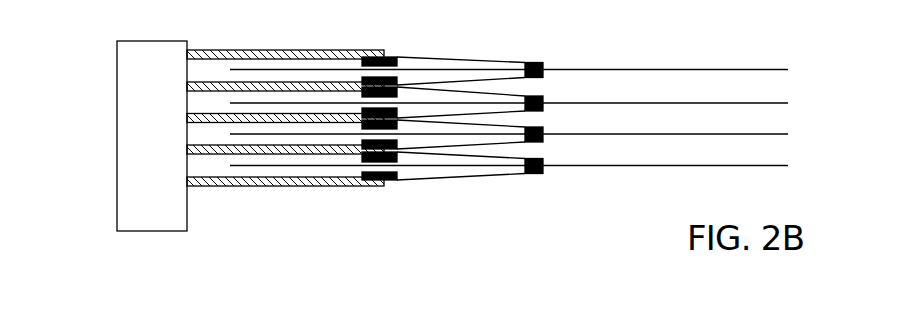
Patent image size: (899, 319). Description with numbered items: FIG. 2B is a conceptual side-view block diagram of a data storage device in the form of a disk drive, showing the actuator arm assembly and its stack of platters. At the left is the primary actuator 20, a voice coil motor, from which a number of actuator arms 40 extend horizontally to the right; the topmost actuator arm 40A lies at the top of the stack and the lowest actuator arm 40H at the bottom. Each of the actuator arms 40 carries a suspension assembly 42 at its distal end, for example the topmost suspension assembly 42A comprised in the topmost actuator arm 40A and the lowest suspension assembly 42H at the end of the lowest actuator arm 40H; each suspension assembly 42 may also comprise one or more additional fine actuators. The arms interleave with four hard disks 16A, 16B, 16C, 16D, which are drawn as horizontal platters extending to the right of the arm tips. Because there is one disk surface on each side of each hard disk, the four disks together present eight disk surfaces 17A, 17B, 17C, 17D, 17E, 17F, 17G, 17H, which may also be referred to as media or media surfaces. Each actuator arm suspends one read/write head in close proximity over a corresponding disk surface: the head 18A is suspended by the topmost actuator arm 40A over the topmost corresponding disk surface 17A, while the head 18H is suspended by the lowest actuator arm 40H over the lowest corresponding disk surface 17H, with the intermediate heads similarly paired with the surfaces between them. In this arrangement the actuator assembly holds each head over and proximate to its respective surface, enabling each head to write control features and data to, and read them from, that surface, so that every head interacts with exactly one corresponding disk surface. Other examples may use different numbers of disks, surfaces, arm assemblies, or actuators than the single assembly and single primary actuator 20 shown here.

The primary actuator 20 is at (116, 73).
The actuator arms 40 is at (285, 137).
The topmost actuator arm 40A is at (304, 49).
The lowest actuator arm 40H is at (250, 187).
The suspension assembly 42 is at (460, 138).
The topmost suspension assembly 42A is at (482, 47).
The lowest suspension assembly 42H is at (484, 190).
The head 18A is at (554, 55).
The head 18H is at (554, 180).
The hard disk 16A is at (802, 70).
The hard disk 16B is at (802, 103).
The hard disk 16C is at (802, 134).
The hard disk 16D is at (802, 166).
The disk surface 17A is at (700, 69).
The disk surface 17B is at (686, 71).
The disk surface 17C is at (700, 102).
The disk surface 17D is at (686, 104).
The disk surface 17E is at (688, 133).
The disk surface 17F is at (670, 135).
The disk surface 17G is at (688, 165).
The disk surface 17H is at (670, 167).